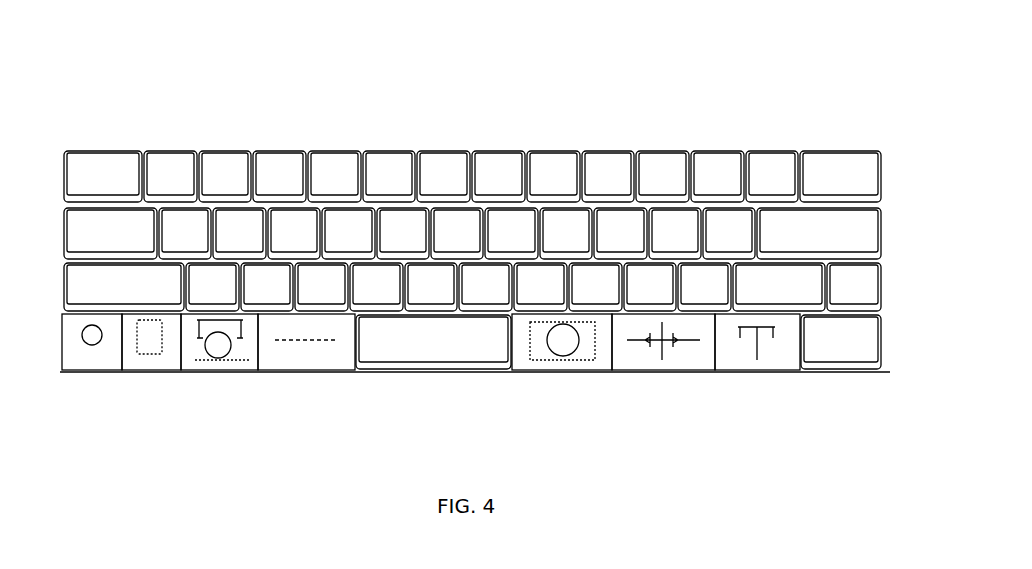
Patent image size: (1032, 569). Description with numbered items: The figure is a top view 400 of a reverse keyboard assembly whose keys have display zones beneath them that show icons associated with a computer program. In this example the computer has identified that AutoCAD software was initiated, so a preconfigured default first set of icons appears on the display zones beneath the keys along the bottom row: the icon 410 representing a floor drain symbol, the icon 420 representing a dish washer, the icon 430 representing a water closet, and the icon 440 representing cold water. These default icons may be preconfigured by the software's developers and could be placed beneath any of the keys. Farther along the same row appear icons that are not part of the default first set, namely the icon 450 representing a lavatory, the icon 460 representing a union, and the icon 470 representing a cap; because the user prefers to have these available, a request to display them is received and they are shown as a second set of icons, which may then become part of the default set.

The top view of a reverse keyboard assembly 400 is at (875, 70).
The icon representing floor drain symbol 410 is at (90, 372).
The icon representing dish washer 420 is at (172, 372).
The icon representing water closet 430 is at (250, 372).
The icon representing cold water 440 is at (345, 372).
The icon representing lavatory 450 is at (563, 372).
The icon representing union 460 is at (692, 372).
The icon representing cap 470 is at (782, 372).